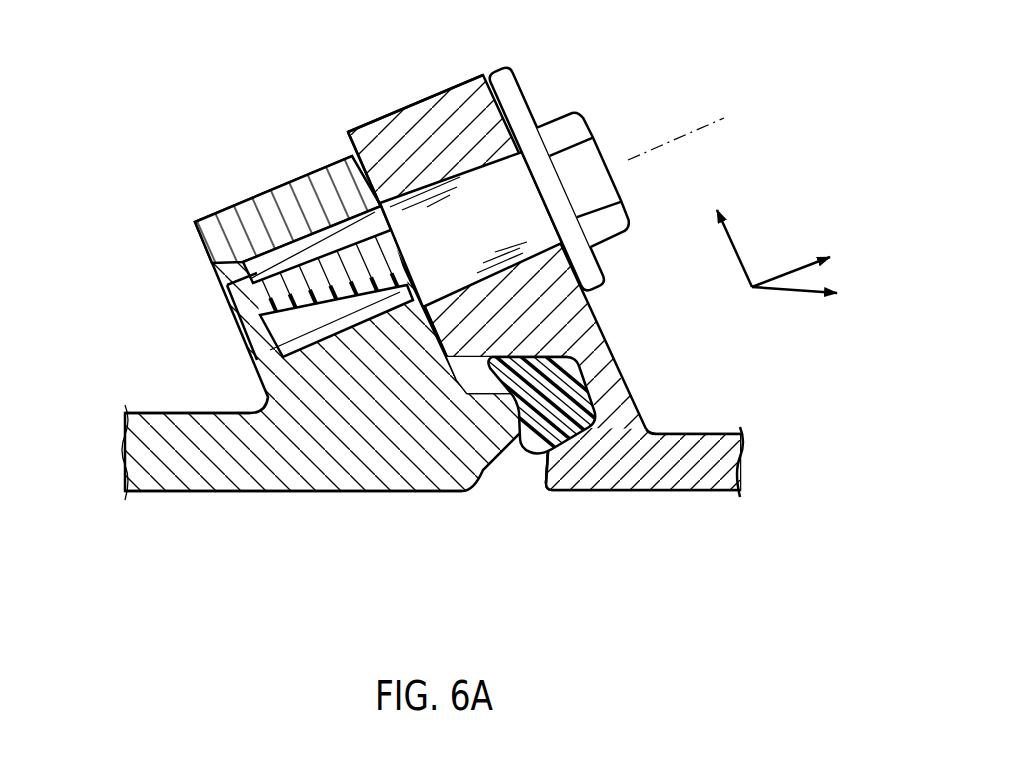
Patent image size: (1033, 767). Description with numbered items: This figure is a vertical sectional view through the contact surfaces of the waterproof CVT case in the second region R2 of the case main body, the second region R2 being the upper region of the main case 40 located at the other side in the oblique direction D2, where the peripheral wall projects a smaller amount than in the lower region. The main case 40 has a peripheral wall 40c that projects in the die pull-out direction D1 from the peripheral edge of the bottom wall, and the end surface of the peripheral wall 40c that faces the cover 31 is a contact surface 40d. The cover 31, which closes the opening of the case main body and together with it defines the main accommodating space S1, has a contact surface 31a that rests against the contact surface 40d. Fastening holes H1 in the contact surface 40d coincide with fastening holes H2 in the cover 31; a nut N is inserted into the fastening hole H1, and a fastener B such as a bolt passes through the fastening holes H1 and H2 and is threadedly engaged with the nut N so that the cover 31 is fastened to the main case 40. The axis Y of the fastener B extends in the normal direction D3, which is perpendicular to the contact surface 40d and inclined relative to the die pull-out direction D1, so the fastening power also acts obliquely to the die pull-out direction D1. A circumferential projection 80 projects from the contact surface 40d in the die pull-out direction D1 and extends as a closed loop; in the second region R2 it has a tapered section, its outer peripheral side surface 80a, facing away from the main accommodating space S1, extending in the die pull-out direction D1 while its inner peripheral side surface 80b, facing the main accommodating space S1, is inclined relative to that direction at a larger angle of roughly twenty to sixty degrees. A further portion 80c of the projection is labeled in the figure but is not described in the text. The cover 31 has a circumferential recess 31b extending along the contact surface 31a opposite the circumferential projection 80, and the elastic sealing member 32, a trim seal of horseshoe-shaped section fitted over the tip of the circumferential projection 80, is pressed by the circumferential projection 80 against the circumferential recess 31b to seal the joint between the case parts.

The cover 31 is at (478, 97).
The contact surface 31a is at (347, 132).
The circumferential recess 31b is at (560, 445).
The sealing member 32 is at (565, 428).
The main case 40 is at (300, 198).
The peripheral wall 40c is at (165, 410).
The contact surface 40d is at (376, 185).
The circumferential projection 80 is at (561, 458).
The outer peripheral side surface 80a is at (482, 388).
The inner peripheral side surface 80b is at (520, 405).
The third portion of seal member 80c is at (600, 365).
The nut N is at (243, 265).
The fastener B is at (595, 128).
The axis of fastener Y is at (670, 140).
The fastening hole H1 is at (237, 305).
The fastening hole H2 is at (478, 157).
The second region R2 is at (173, 213).
The main accommodating space S1 is at (360, 625).
The die pull-out direction D1 is at (810, 293).
The oblique direction D2 is at (726, 232).
The normal direction D3 is at (808, 261).